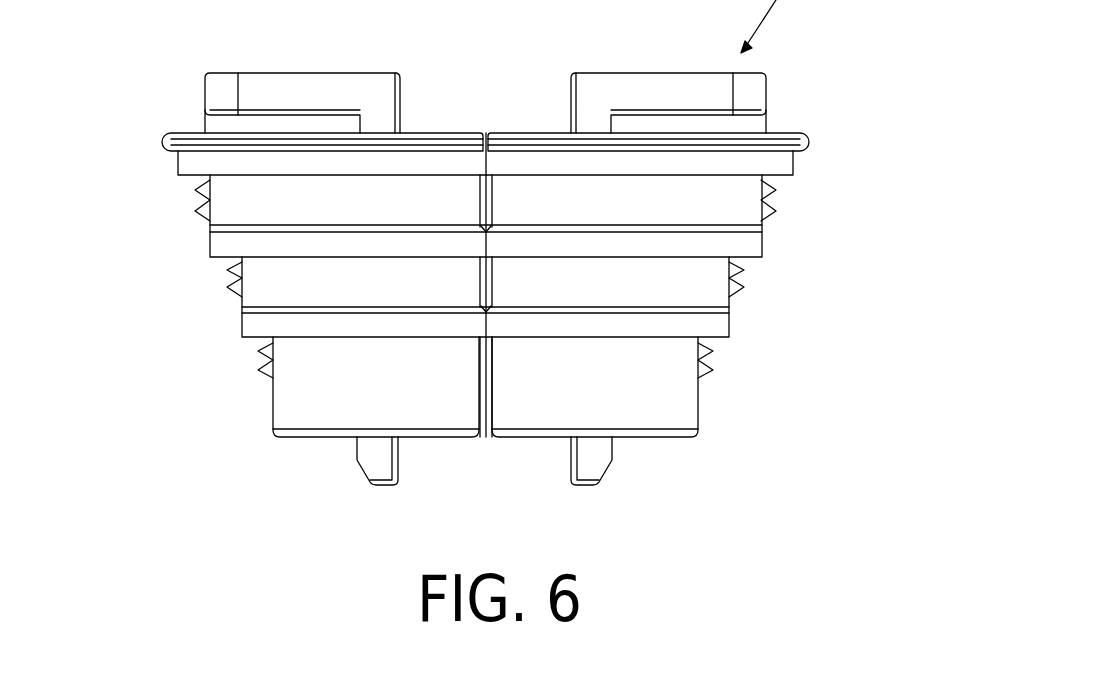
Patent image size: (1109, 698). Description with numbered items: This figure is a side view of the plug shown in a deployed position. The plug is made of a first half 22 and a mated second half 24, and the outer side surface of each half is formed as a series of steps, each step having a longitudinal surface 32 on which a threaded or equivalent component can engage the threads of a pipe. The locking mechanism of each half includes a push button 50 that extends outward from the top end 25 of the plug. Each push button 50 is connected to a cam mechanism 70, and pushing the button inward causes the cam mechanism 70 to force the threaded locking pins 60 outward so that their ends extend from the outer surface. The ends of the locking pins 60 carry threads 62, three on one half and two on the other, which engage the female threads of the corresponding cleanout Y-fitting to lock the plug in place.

The first half 22 is at (185, 134).
The second half 24 is at (795, 140).
The top end 25 is at (538, 125).
The longitudinal surface 32 is at (725, 303).
The push button 50 is at (287, 88).
The threaded locking pins 60 is at (265, 362).
The threads 62 is at (195, 212).
The cam mechanism 70 is at (358, 478).